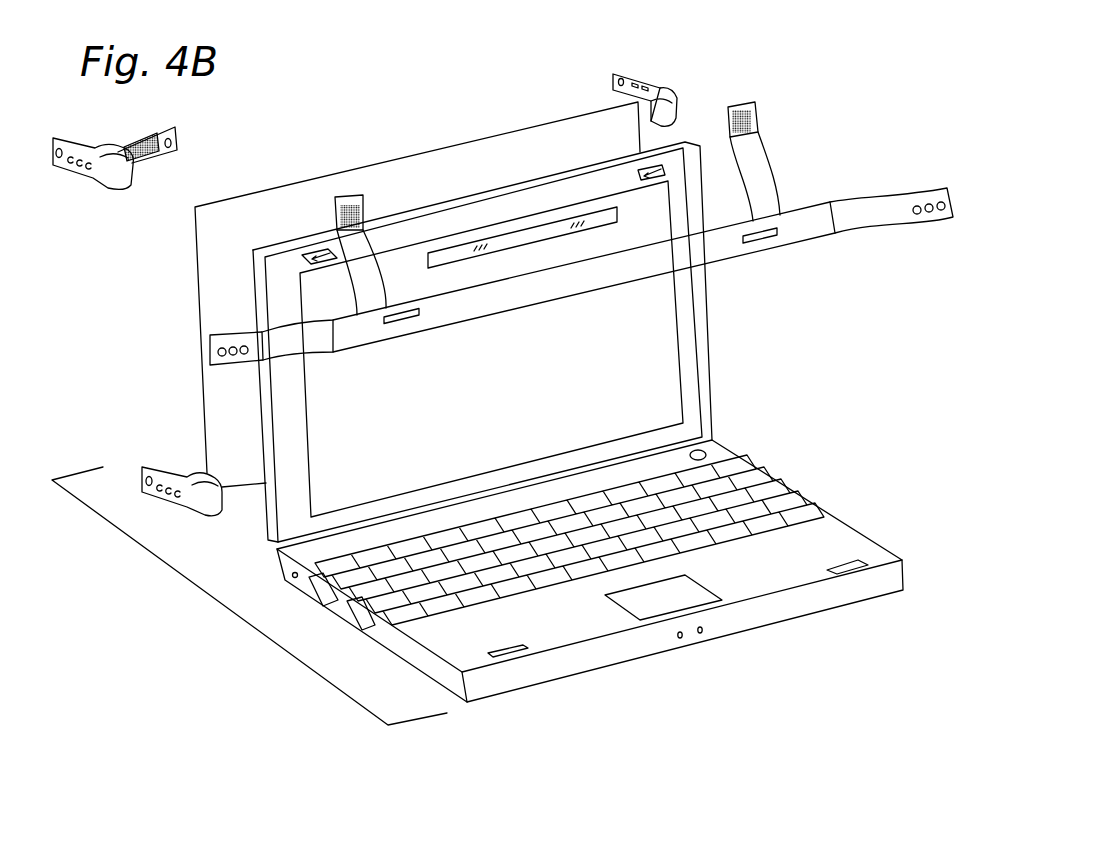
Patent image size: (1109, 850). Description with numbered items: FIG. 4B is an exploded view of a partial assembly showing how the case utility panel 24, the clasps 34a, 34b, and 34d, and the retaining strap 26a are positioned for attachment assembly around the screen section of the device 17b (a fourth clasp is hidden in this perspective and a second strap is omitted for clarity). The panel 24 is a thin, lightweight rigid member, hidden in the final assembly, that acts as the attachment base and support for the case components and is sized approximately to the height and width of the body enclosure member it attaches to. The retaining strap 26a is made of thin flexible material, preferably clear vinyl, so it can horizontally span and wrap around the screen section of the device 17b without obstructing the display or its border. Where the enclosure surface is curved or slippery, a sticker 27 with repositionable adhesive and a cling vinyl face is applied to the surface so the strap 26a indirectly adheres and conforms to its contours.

The case utility panel 24 is at (388, 152).
The sticker 27 is at (497, 247).
The clasp 34a is at (668, 88).
The clasp 34b is at (187, 140).
The clasp 34d is at (155, 465).
The retaining strap 26a is at (720, 245).
The device 17b is at (698, 390).